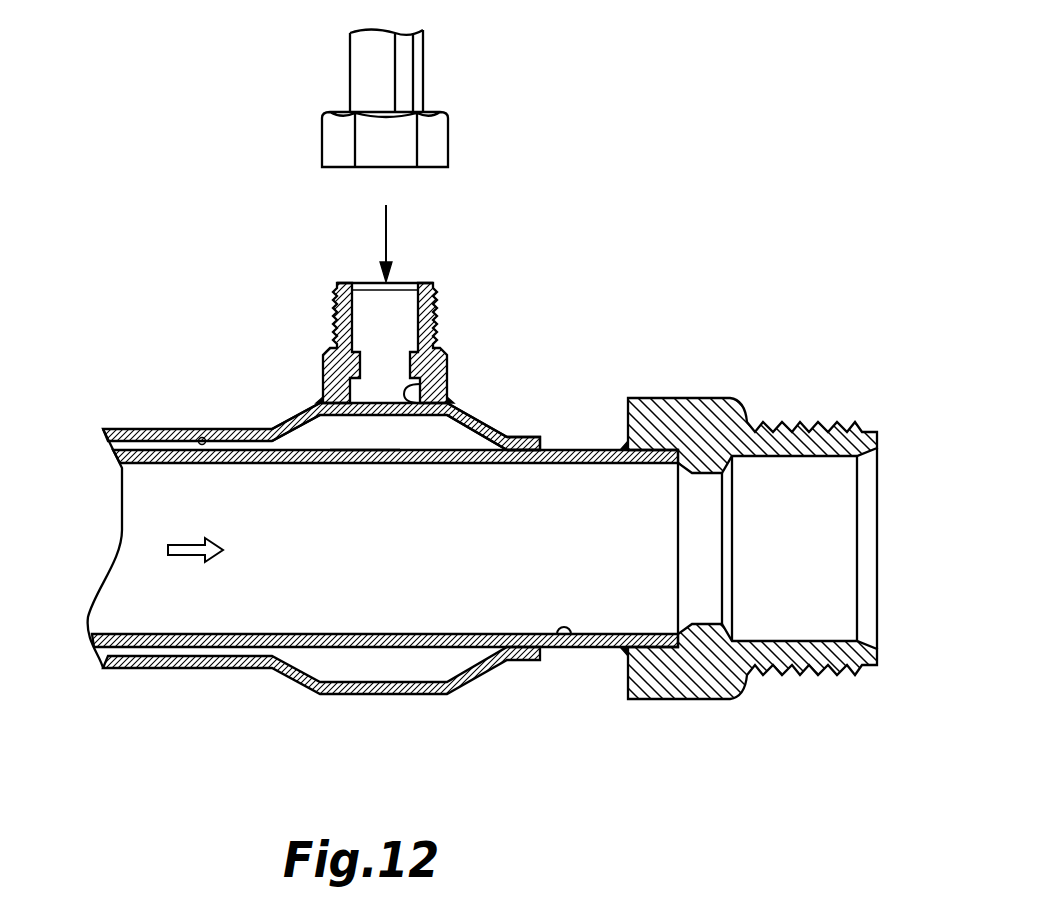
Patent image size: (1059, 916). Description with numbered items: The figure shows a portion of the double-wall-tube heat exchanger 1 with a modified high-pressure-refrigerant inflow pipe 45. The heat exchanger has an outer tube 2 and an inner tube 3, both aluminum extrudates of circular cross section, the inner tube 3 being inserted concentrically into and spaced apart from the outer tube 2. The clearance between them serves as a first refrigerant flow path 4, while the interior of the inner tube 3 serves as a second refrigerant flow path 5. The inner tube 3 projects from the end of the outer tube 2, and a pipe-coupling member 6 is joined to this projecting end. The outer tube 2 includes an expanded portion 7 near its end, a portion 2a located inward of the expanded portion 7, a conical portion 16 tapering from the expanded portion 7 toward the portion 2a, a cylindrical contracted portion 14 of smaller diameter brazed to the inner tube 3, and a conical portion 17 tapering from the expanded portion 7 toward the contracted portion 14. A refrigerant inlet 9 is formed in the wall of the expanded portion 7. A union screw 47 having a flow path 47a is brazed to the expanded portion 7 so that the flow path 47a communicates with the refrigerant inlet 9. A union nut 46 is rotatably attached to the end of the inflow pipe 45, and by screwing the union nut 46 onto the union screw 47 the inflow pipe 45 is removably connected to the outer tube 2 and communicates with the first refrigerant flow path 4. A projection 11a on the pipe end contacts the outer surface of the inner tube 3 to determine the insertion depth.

The double-wall-tube heat exchanger 1 is at (634, 175).
The outer tube 2 is at (122, 428).
The portion located inward of the expanded portions 2a is at (163, 428).
The inner tube 3 is at (133, 648).
The first refrigerant flow path 4 is at (199, 438).
The second refrigerant flow path 5 is at (566, 648).
The pipe-coupling member 6 is at (680, 418).
The expanded portion 7 is at (395, 695).
The refrigerant inlet 9 is at (424, 386).
The projection 11a is at (366, 449).
The contracted portion 14 is at (525, 437).
The conical portion 16 is at (297, 423).
The conical portion 17 is at (493, 435).
The high-pressure-refrigerant inflow pipe 45 is at (410, 57).
The union nut 46 is at (440, 142).
The union screw 47 is at (321, 356).
The flow path 47a is at (362, 288).